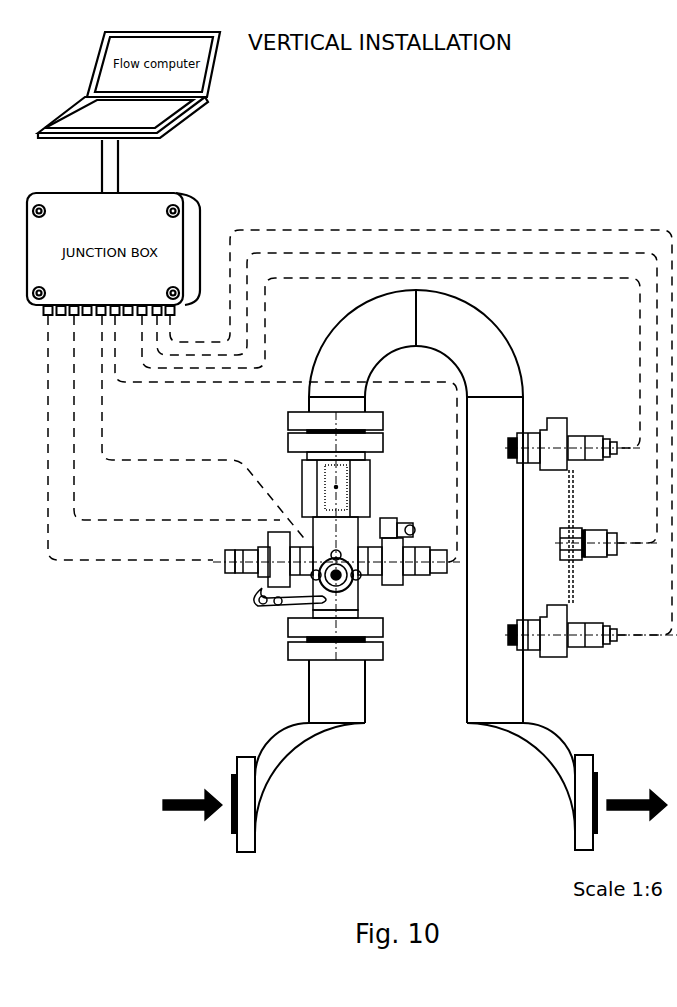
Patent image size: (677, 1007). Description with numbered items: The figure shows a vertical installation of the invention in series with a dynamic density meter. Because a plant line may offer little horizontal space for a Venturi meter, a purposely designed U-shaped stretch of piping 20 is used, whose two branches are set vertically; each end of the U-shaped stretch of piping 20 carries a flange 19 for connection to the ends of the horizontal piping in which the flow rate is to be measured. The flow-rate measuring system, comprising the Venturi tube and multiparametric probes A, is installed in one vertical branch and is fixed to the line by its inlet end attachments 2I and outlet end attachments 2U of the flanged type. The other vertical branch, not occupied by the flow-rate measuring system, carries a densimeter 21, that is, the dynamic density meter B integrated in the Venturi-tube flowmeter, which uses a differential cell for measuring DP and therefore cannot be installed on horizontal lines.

The U-shaped stretch of piping 20 is at (487, 335).
The outlet end attachments 2U is at (288, 422).
The inlet end attachments 2I is at (288, 646).
The flange 19 is at (237, 757).
The densimeter 21 is at (580, 430).
The Venturi tube and multiparametric probes A is at (402, 538).
The dynamic density meter B is at (588, 528).